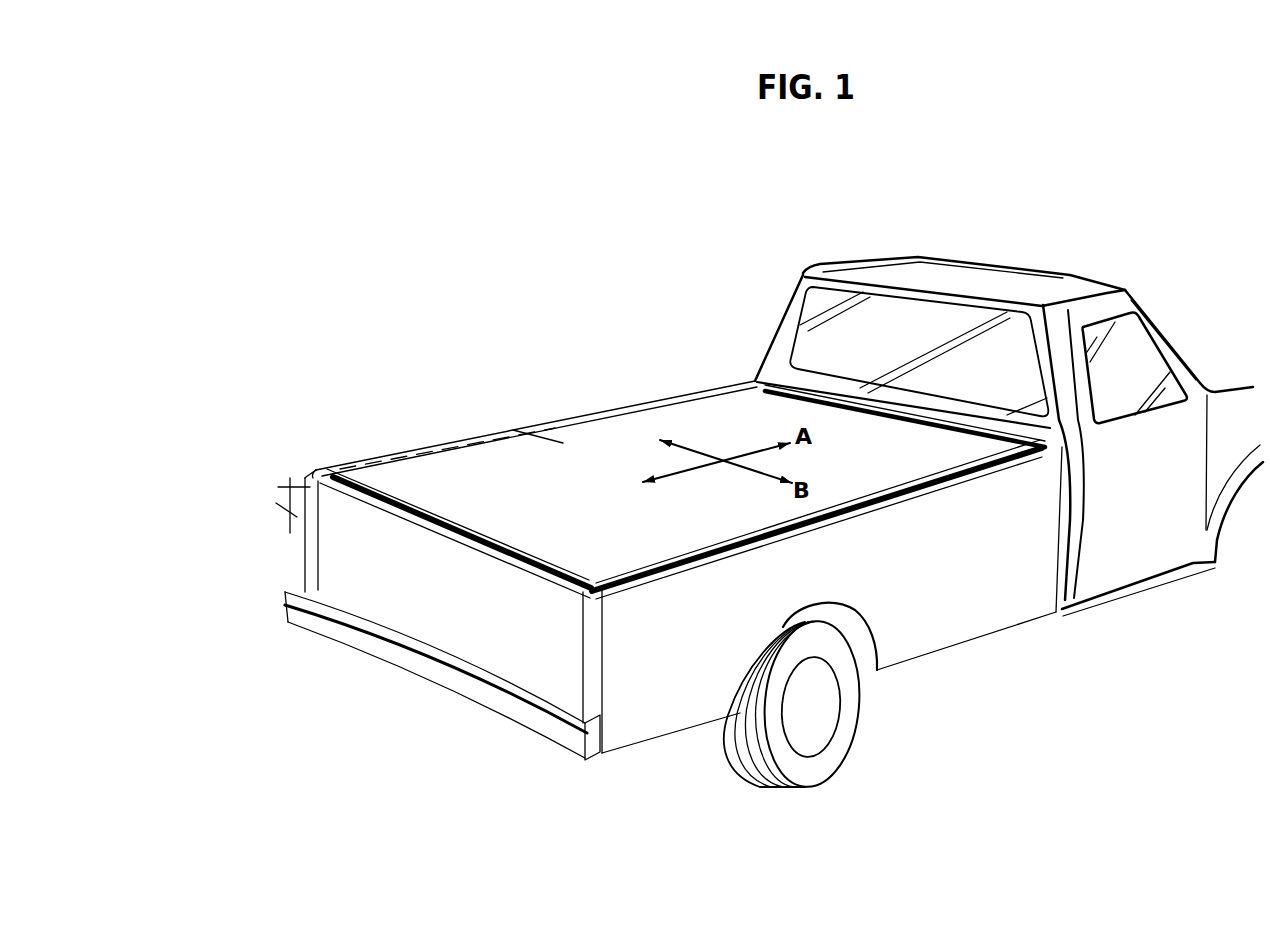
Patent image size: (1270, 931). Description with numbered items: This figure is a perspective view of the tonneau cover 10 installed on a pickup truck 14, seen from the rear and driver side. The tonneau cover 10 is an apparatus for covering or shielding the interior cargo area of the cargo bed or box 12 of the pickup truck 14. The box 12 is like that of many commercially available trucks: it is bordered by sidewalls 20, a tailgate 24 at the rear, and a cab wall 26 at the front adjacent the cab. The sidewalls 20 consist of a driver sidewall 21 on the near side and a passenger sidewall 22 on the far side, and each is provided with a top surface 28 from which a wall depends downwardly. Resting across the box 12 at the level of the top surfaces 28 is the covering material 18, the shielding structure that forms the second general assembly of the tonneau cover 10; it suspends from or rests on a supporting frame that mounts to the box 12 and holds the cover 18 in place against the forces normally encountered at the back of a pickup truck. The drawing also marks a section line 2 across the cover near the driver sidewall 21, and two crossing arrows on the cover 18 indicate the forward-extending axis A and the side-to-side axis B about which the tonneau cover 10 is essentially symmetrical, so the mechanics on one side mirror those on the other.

The tonneau cover 10 is at (638, 367).
The cargo bed or box 12 is at (358, 426).
The pickup truck 14 is at (1218, 374).
The covering material 18 is at (881, 472).
The sidewalls 20 is at (681, 698).
The driver sidewall 21 is at (415, 452).
The passenger sidewall 22 is at (808, 586).
The tailgate 24 is at (474, 613).
The cab wall 26 is at (900, 406).
The top surfaces 28 is at (698, 396).
The section line 2- 2 is at (510, 428).